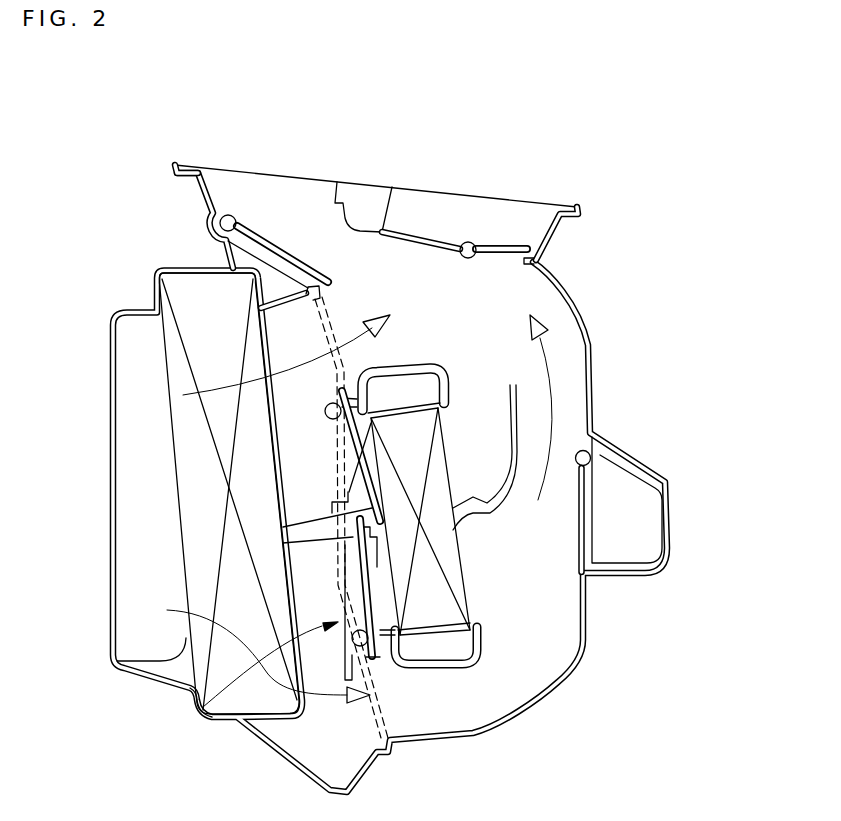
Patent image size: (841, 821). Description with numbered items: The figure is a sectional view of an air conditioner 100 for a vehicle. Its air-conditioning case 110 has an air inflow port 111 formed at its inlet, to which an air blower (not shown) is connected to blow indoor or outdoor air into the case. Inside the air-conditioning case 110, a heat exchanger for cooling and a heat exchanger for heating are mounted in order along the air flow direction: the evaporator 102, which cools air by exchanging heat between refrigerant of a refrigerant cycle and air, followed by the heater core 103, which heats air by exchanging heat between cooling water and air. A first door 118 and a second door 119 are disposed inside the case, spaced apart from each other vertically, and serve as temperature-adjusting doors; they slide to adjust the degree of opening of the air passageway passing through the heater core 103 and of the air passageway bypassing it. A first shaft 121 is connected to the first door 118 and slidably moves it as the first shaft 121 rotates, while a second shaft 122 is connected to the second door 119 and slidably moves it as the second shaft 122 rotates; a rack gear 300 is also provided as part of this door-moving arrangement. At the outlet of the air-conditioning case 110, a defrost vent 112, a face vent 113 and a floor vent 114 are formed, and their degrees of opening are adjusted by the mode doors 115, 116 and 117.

The air conditioner 100 is at (645, 226).
The evaporator 102 is at (205, 515).
The heater core 103 is at (440, 592).
The air-conditioning case 110 is at (577, 312).
The air inflow port 111 is at (140, 623).
The defrost vent 112 is at (275, 198).
The face vent 113 is at (440, 210).
The floor vent 114 is at (630, 508).
The mode door 115 is at (258, 256).
The mode door 116 is at (489, 255).
The mode door 117 is at (583, 528).
The first door 118 is at (360, 465).
The second door 119 is at (210, 713).
The first shaft 121 is at (330, 403).
The second shaft 122 is at (350, 641).
The rack gear 300 is at (360, 587).